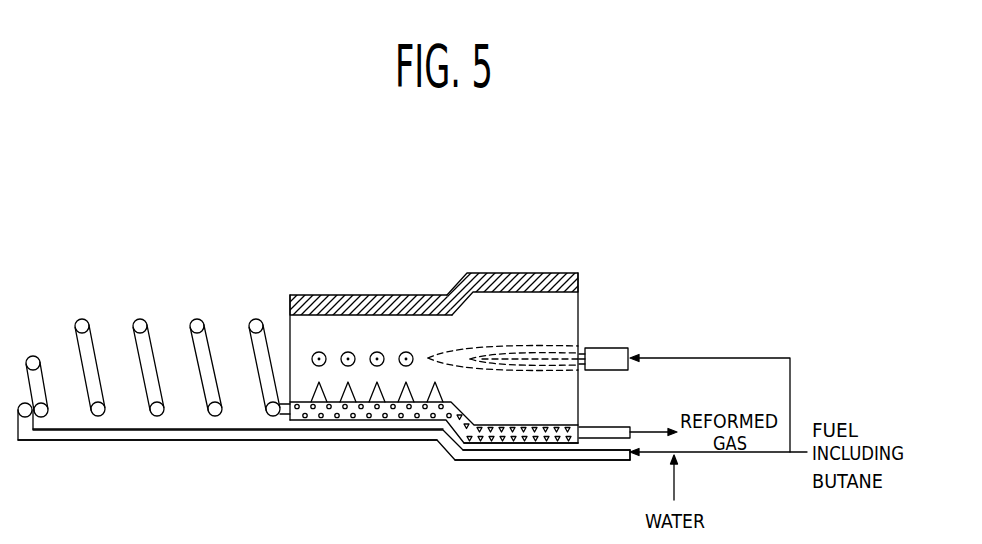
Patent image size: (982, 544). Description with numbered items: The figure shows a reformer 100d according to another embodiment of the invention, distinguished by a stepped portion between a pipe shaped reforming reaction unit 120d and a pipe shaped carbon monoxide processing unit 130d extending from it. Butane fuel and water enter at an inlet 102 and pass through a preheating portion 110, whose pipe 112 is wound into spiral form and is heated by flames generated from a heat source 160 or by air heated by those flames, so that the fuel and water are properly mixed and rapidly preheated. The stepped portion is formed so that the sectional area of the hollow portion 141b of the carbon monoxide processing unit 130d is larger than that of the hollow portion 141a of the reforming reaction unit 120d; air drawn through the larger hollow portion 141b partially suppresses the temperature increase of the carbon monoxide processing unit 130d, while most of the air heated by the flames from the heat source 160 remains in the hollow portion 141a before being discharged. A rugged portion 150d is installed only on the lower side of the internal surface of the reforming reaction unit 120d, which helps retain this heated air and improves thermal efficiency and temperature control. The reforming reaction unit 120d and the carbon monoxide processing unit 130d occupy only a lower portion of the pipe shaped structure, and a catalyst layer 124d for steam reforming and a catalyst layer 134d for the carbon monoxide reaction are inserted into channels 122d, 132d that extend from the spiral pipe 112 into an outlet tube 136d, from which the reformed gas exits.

The reformer 100d is at (65, 198).
The preheating portion 110 is at (160, 298).
The pipe 112 is at (197, 325).
The reforming reaction unit 120d is at (395, 437).
The channel 122d is at (313, 415).
The catalyst layer 124d is at (350, 407).
The carbon monoxide processing unit 130d is at (515, 457).
The channel 132d is at (487, 445).
The catalyst layer 134d is at (543, 445).
The outlet tube 136d is at (605, 425).
The hollow portion 141a is at (332, 345).
The hollow portion 141b is at (498, 330).
The rugged portion 150d is at (377, 350).
The heat source 160 is at (608, 347).
The inlet 102 is at (598, 460).